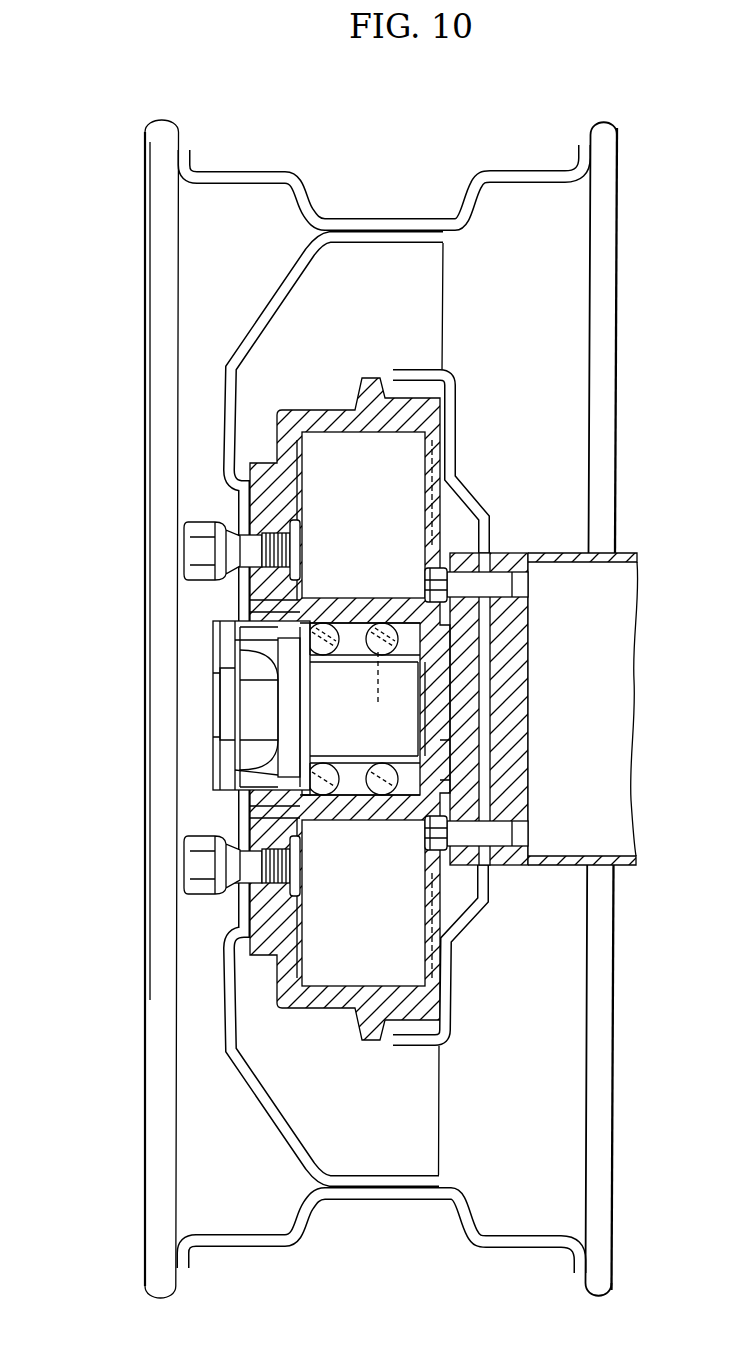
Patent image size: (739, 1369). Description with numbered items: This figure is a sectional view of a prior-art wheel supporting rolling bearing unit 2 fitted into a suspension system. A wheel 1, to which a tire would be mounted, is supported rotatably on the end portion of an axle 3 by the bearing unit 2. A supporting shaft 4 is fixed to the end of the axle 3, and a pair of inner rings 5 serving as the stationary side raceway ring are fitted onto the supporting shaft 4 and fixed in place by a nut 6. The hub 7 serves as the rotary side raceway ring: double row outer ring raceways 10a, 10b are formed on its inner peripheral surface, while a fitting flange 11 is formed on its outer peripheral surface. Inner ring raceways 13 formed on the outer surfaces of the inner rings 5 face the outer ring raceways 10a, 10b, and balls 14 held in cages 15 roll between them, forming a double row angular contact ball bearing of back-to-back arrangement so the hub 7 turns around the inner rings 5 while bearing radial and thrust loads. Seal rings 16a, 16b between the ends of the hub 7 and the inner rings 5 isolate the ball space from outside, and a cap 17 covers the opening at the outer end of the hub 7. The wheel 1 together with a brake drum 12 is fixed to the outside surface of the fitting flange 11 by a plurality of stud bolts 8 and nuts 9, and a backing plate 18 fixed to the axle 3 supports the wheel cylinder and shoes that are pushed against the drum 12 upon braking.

The wheel 1 is at (318, 222).
The wheel supporting rolling bearing unit 2 is at (248, 656).
The axle 3 is at (556, 553).
The supporting shaft 4 is at (305, 690).
The inner ring 5 is at (370, 752).
The nut 6 is at (265, 740).
The hub 7 is at (240, 600).
The stud bolt 8 is at (248, 512).
The nut 9 is at (196, 551).
The outer ring raceway 10a is at (345, 636).
The outer ring raceway 10b is at (382, 628).
The fitting flange 11 is at (280, 892).
The drum 12 is at (313, 1003).
The inner ring raceway 13 is at (322, 796).
The ball 14 is at (330, 624).
The cage 15 is at (343, 662).
The seal ring 16a is at (320, 770).
The seal ring 16b is at (437, 757).
The cap 17 is at (310, 688).
The backing plate 18 is at (487, 902).